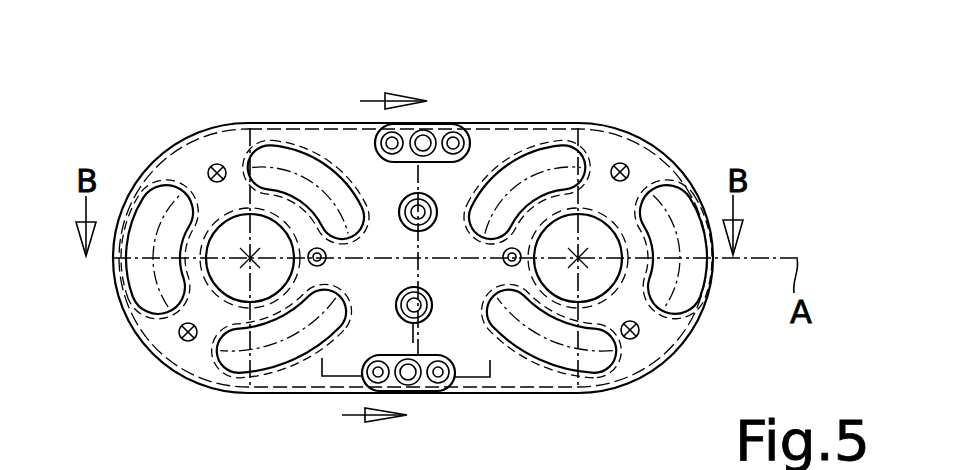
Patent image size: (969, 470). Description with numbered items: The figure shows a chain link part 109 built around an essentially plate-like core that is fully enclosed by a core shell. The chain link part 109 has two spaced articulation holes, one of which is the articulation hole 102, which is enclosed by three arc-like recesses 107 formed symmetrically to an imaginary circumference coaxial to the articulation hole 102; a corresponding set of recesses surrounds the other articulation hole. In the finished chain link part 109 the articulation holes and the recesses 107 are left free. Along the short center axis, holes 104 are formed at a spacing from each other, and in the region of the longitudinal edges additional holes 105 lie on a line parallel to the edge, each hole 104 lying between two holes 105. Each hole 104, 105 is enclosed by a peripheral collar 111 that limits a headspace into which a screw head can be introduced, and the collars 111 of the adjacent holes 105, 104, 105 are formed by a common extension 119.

The articulation hole 102 is at (597, 233).
The hole 104 is at (404, 358).
The hole 105 is at (482, 127).
The arc-like recess 107 is at (545, 158).
The chain link part 109 is at (658, 342).
The peripheral collar 111 is at (396, 130).
The common extension 119 is at (396, 128).